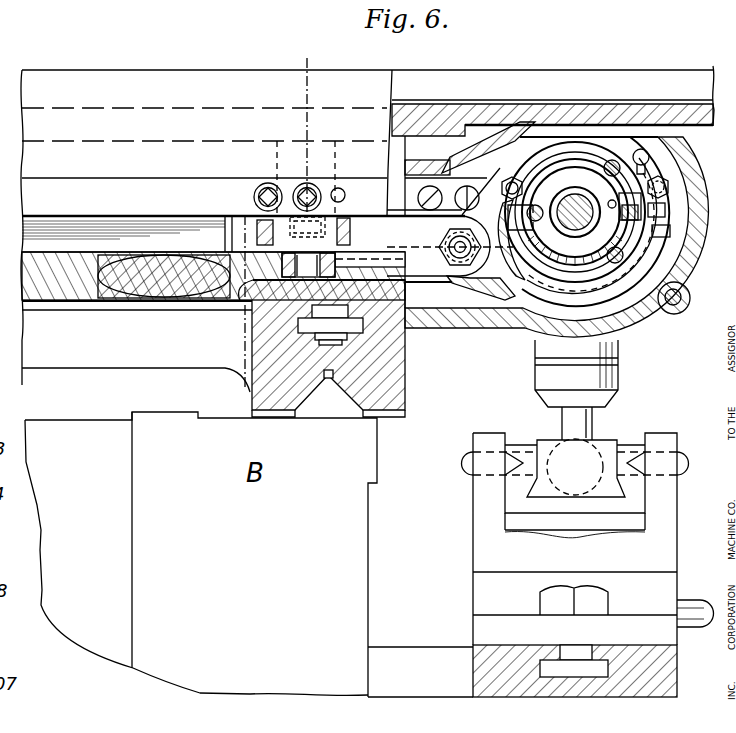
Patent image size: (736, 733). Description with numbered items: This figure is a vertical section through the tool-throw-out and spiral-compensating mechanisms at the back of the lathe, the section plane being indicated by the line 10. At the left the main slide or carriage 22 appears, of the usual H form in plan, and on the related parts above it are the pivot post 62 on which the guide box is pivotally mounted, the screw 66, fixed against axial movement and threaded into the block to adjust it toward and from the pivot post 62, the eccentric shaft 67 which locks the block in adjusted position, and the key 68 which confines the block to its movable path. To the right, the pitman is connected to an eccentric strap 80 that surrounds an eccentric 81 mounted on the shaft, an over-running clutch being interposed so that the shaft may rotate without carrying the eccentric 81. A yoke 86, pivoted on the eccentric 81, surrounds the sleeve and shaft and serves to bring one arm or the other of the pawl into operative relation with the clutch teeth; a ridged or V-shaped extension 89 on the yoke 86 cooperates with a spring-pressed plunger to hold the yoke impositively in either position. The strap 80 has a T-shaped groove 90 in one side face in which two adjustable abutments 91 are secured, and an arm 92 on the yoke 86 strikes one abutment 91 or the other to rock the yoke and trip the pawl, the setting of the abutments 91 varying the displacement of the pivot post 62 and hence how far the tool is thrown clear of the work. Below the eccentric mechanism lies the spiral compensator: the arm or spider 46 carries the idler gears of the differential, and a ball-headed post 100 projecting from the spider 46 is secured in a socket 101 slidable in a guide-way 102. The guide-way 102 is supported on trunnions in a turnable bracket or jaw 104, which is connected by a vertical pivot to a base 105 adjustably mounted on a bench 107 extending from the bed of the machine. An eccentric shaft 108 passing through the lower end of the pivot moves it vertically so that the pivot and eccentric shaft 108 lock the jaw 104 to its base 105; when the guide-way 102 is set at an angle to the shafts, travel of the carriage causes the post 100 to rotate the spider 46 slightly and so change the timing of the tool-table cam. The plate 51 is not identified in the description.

The section line 10 is at (306, 67).
The main slide or carriage 22 is at (420, 384).
The arm or spider 46 is at (618, 357).
The plate 51 is at (478, 188).
The pivot post 62 is at (312, 264).
The screw 66 is at (305, 193).
The eccentric shaft 67 is at (254, 198).
The key 68 is at (345, 195).
The eccentric strap 80 is at (500, 292).
The eccentric 81 is at (557, 168).
The yoke 86 is at (585, 175).
The ridged or V-shaped extension 89 is at (632, 200).
The T-shaped groove 90 is at (593, 292).
The adjustable abutments 91 is at (478, 217).
The arm 92 is at (572, 196).
The ball-headed post 100 is at (595, 425).
The socket 101 is at (548, 440).
The guide-way 102 is at (514, 442).
The turnable bracket or jaw 104 is at (476, 541).
The base 105 is at (480, 592).
The bench 107 is at (448, 647).
The eccentric shaft 108 is at (698, 604).